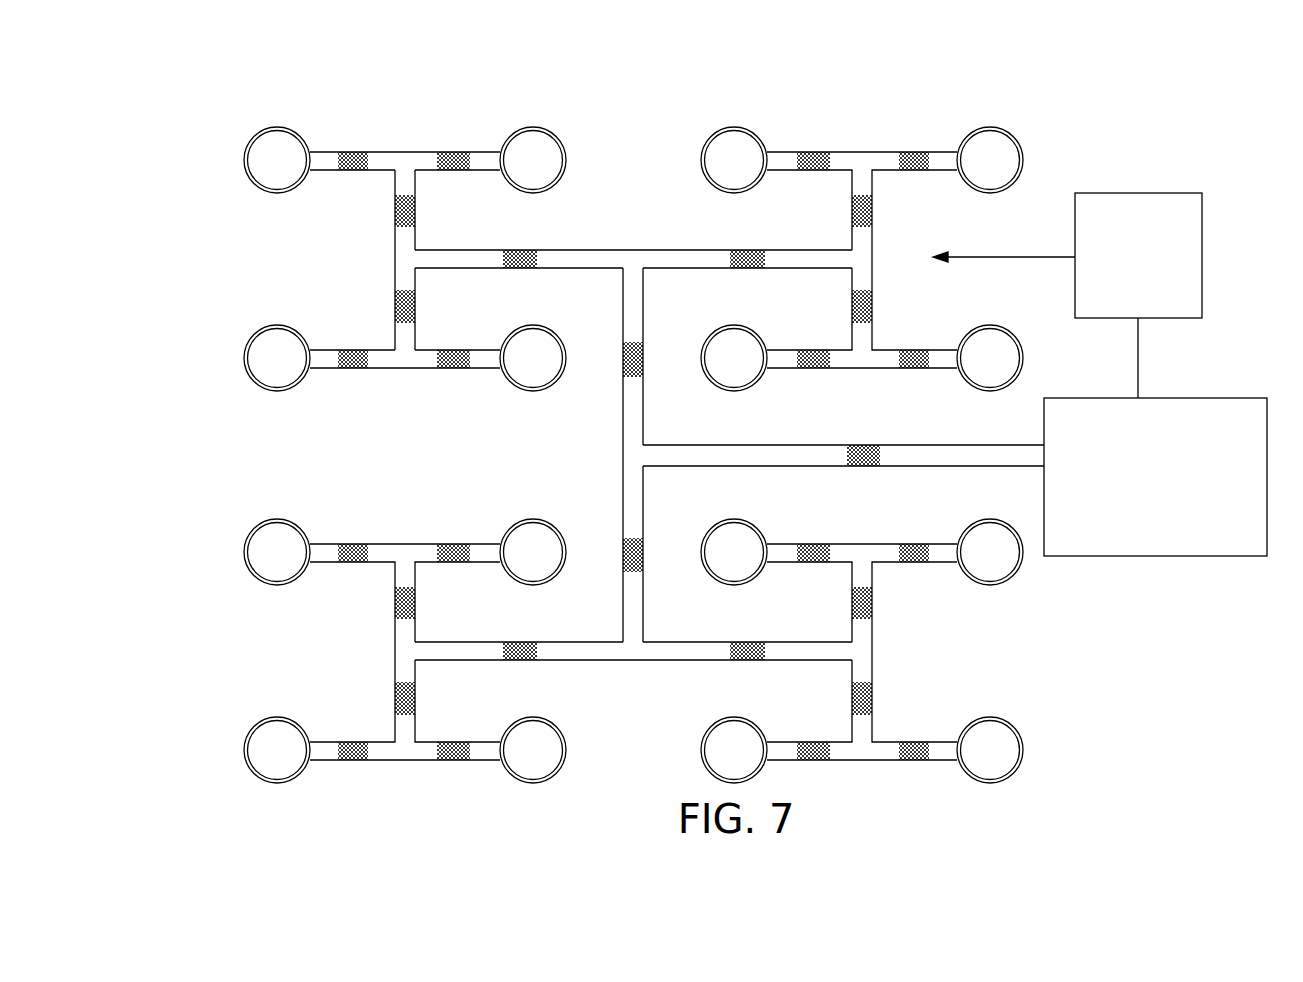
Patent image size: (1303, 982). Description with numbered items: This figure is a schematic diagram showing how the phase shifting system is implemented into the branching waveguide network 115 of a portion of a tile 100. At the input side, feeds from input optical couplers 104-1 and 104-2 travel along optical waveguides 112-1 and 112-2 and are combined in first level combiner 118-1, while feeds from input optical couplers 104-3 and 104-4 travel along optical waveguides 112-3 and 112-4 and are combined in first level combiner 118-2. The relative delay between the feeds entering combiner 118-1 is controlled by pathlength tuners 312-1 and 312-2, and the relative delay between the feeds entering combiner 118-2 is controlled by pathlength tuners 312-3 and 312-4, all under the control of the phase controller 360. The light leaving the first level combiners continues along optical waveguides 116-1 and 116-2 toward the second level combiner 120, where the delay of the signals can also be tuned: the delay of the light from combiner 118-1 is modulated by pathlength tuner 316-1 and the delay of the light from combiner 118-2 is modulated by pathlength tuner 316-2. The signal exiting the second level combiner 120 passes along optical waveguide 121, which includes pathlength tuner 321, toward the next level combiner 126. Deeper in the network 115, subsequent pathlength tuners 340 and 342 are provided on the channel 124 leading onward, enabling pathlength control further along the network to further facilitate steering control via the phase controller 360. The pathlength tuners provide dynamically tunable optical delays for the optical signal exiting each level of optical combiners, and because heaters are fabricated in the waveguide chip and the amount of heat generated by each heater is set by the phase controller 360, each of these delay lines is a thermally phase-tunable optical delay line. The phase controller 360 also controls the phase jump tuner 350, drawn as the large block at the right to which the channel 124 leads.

The tile 100 is at (858, 425).
The input optical coupler 104-1 is at (277, 160).
The input optical coupler 104-2 is at (533, 160).
The input optical coupler 104-3 is at (277, 358).
The input optical coupler 104-4 is at (533, 358).
The optical waveguide 112-1 is at (354, 178).
The optical waveguide 112-2 is at (458, 180).
The optical waveguide 112-3 is at (354, 334).
The optical waveguide 112-4 is at (449, 378).
The branching waveguide network 115 is at (247, 649).
The optical waveguide 116-1 is at (382, 246).
The optical waveguide 116-2 is at (382, 283).
The first level combiner 118-1 is at (404, 132).
The first level combiner 118-2 is at (375, 390).
The second level combiner 120 is at (347, 262).
The optical waveguide 121 is at (466, 280).
The channel 124 is at (985, 445).
The optical combiner 126 is at (640, 249).
The pathlength tuner 312-1 is at (357, 150).
The pathlength tuner 312-2 is at (460, 150).
The pathlength tuner 312-3 is at (352, 370).
The pathlength tuner 312-4 is at (462, 370).
The pathlength tuner 316-1 is at (395, 208).
The pathlength tuner 316-2 is at (395, 312).
The pathlength tuner 321 is at (514, 270).
The pathlength tuner 340 is at (643, 357).
The pathlength tuner 342 is at (864, 467).
The phase jump tuner 350 is at (1183, 557).
The phase controller 360 is at (1067, 295).